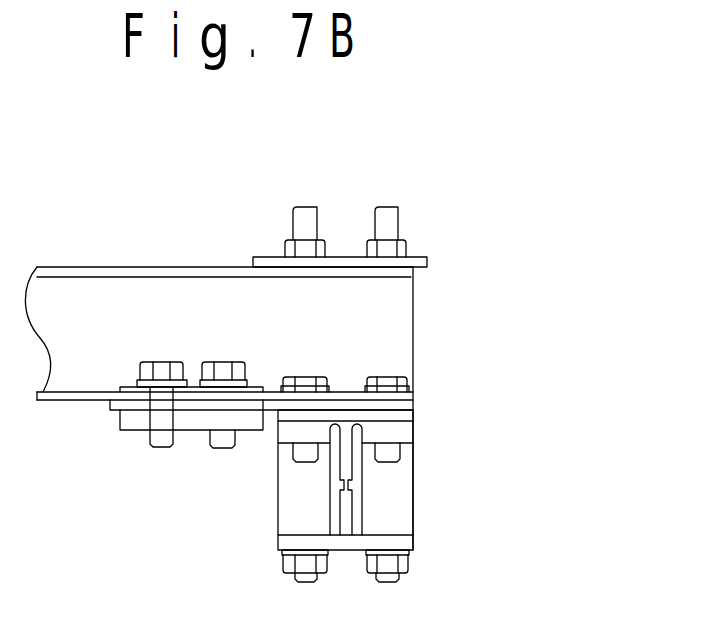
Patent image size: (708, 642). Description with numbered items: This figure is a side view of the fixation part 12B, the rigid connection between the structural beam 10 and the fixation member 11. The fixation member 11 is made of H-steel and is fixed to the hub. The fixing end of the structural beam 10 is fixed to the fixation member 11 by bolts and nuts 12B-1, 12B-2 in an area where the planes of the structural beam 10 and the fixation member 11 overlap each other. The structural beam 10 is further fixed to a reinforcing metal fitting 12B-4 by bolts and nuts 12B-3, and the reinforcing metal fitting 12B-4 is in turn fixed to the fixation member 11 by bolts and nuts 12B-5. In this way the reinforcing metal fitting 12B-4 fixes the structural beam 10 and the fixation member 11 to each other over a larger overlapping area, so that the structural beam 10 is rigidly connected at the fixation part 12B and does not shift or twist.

The structural beam 10 is at (63, 267).
The fixation member 11 is at (413, 489).
The fixation part 12B is at (438, 198).
The bolts and nuts 12B-1 is at (405, 247).
The bolts and nuts 12B-2 is at (407, 563).
The bolts and nuts 12B-3 is at (162, 362).
The reinforcing metal fitting 12B-4 is at (114, 411).
The bolts and nuts 12B-5 is at (402, 386).